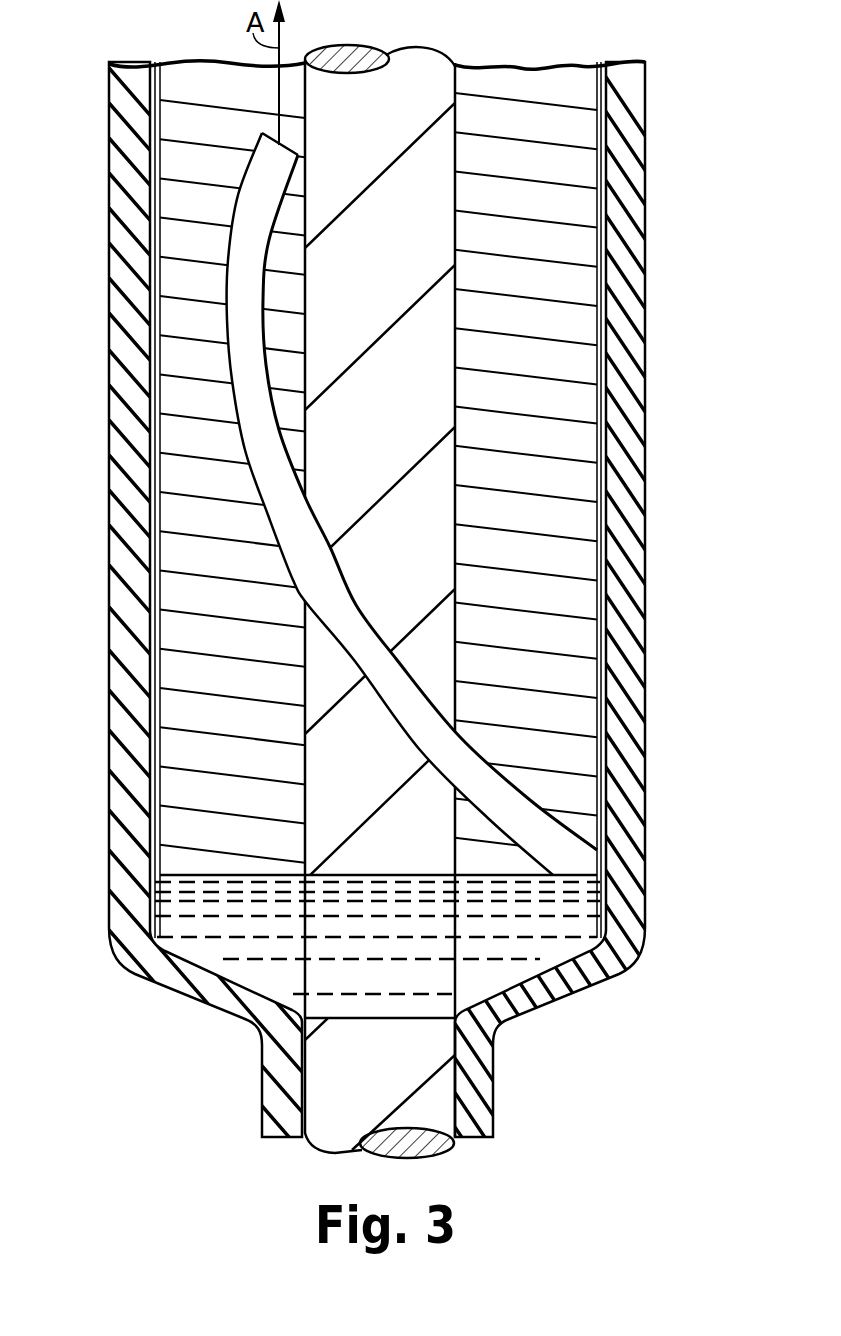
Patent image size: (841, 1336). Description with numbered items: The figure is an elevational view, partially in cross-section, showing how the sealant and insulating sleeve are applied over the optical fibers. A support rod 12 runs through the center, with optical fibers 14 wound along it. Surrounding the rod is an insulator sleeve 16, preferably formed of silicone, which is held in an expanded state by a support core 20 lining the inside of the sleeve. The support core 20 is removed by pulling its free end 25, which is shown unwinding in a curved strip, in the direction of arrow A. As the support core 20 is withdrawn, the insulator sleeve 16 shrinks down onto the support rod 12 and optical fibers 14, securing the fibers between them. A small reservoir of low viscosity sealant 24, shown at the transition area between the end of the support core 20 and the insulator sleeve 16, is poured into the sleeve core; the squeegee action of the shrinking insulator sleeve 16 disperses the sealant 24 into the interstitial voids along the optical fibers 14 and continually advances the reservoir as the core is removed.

The support rod 12 is at (428, 187).
The optical fibers 14 is at (407, 313).
The insulator sleeve 16 is at (622, 470).
The support core 20 is at (598, 517).
The sealant 24 is at (595, 910).
The free end 25 is at (205, 167).